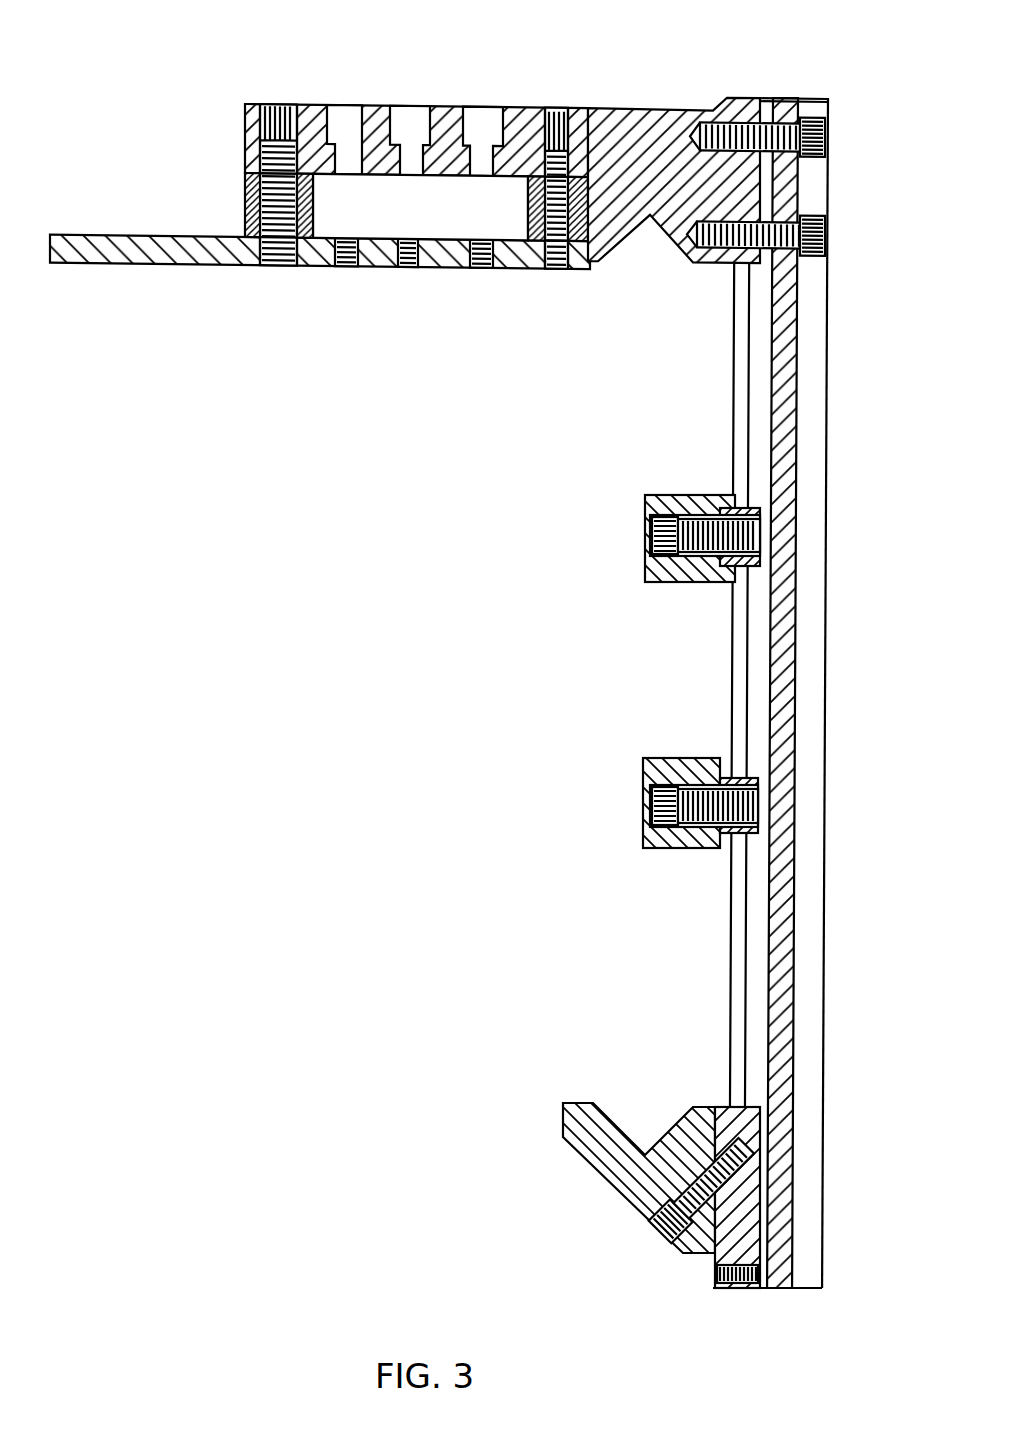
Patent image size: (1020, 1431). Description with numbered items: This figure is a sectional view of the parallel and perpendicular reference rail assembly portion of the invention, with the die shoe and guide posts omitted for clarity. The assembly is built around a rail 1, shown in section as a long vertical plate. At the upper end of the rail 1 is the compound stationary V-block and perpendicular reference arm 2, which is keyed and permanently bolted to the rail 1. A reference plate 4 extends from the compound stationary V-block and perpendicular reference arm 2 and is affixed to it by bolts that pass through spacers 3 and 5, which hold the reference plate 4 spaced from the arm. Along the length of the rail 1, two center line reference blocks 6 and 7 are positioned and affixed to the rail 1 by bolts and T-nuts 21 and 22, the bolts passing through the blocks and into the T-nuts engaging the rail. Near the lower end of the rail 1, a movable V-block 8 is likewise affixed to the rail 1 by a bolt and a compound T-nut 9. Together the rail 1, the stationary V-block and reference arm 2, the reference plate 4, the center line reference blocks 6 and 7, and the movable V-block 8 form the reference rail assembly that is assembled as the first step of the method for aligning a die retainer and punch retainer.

The rail 1 is at (788, 660).
The compound stationary V-block and perpendicular reference arm 2 is at (375, 128).
The spacer 3 is at (247, 188).
The reference plate 4 is at (200, 258).
The spacer 5 is at (587, 185).
The center line reference block 6 is at (672, 568).
The center line reference block 7 is at (680, 833).
The movable V-block 8 is at (603, 1148).
The compound T-nut 9 is at (742, 1198).
The T-nut 21 is at (680, 521).
The T-nut 22 is at (718, 762).